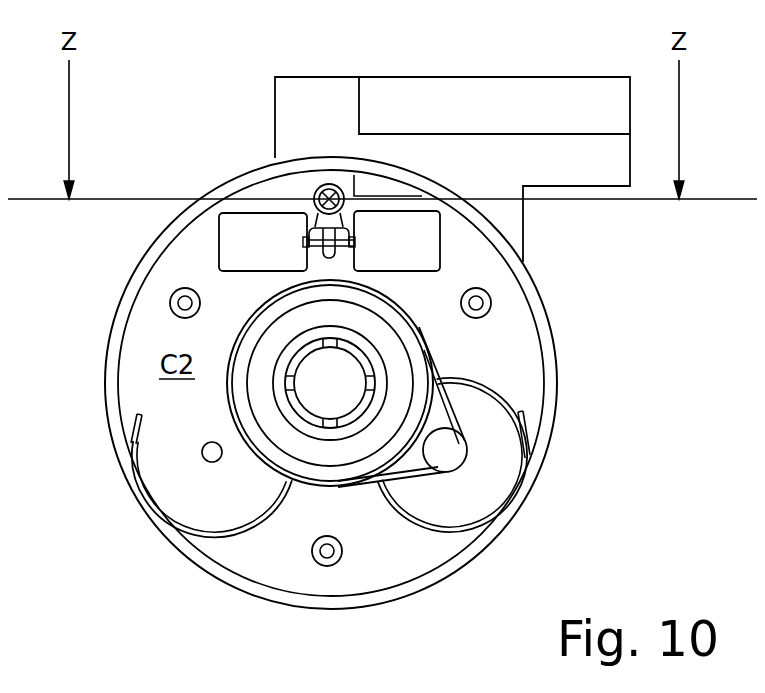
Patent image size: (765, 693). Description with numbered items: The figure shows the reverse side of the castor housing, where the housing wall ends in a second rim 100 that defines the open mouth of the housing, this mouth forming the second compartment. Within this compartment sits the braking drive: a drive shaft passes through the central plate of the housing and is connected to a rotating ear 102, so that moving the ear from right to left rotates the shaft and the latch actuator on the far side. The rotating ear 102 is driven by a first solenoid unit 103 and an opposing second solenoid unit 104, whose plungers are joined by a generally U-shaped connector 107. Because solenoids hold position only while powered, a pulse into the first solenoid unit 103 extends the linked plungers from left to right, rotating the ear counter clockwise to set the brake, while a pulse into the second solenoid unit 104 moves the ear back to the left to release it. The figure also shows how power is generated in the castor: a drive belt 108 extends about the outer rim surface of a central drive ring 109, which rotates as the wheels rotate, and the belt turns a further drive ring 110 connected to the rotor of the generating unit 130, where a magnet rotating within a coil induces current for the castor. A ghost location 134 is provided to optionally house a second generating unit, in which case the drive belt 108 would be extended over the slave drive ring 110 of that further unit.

The second rim 100 is at (545, 384).
The rotating ear 102 is at (313, 201).
The first solenoid unit 103 is at (243, 256).
The second solenoid unit 104 is at (377, 255).
The connector 107 is at (350, 192).
The drive belt 108 is at (403, 478).
The central drive ring 109 is at (306, 468).
The further drive ring 110 is at (450, 450).
The generating unit 130 is at (468, 497).
The ghost location 134 is at (157, 475).